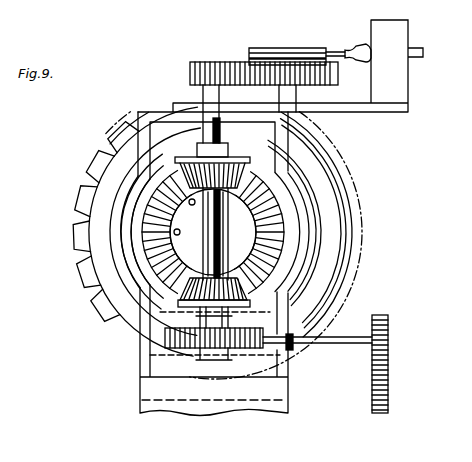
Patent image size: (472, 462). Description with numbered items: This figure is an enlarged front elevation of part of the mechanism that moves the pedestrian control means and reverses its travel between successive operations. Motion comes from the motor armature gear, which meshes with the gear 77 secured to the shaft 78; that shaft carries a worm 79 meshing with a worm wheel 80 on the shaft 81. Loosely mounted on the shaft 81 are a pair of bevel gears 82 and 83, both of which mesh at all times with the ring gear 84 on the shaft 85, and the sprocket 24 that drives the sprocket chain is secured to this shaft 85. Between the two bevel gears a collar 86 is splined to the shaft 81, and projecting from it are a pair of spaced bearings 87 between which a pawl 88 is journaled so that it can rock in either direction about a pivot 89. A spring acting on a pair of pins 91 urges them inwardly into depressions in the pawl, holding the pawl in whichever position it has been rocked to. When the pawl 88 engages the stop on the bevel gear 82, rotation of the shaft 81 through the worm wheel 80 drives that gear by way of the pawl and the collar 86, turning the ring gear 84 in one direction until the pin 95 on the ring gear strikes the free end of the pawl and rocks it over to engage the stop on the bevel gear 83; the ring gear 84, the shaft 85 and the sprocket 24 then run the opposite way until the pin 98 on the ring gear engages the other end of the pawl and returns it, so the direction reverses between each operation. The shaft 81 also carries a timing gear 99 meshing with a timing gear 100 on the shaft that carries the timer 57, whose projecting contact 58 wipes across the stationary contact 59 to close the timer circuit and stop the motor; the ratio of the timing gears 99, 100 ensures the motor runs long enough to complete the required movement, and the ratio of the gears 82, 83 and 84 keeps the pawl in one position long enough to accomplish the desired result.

The sprocket 24 is at (352, 183).
The timer 57 is at (276, 50).
The projecting contact 58 is at (333, 50).
The stationary contact 59 is at (352, 48).
The gear 77 is at (388, 340).
The shaft 78 is at (332, 335).
The worm 79 is at (200, 322).
The worm wheel 80 is at (170, 335).
The shaft 81 is at (236, 330).
The bevel gear 82 is at (246, 300).
The bevel gear 83 is at (185, 163).
The ring gear 84 is at (270, 246).
The shaft 85 is at (221, 226).
The collar 86 is at (220, 218).
The bearings 87 is at (205, 214).
The pawl 88 is at (263, 190).
The pivot 89 is at (210, 228).
The pins 91 is at (160, 182).
The pin 95 is at (165, 240).
The pin 98 is at (140, 205).
The timing gear 99 is at (204, 62).
The timing gear 100 is at (330, 86).